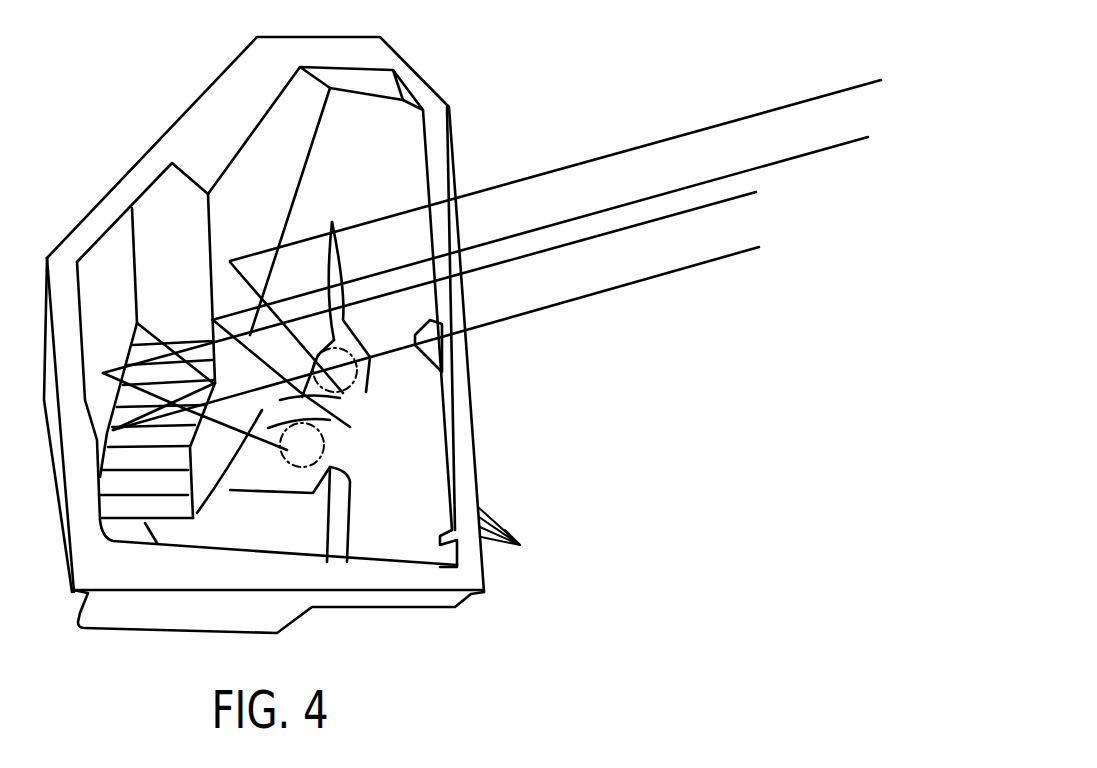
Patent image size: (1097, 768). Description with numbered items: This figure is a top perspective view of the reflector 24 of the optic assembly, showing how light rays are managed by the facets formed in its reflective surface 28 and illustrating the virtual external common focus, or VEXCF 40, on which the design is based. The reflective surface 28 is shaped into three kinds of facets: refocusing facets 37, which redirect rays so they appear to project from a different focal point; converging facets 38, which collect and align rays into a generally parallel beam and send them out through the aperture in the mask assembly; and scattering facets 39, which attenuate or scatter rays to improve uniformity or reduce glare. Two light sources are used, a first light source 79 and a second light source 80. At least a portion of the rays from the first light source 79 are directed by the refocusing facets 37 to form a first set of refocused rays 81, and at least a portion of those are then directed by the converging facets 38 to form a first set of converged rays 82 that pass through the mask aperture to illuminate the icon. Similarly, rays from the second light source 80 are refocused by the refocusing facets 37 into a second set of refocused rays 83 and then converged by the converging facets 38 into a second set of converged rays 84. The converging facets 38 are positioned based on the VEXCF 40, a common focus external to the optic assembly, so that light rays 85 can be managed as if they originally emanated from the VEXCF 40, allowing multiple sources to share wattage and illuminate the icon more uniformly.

The reflector 24 is at (107, 562).
The reflective surface 28 is at (361, 167).
The refocusing facets 37 is at (280, 400).
The converging facets 38 is at (98, 269).
The scattering facets 39 is at (120, 484).
The VEXCF 40 is at (520, 545).
The first light source 79 is at (330, 447).
The second light source 80 is at (345, 392).
The first set of refocused rays 81 is at (238, 468).
The first set of converged rays 82 is at (592, 240).
The second set of refocused rays 83 is at (332, 222).
The second set of converged rays 84 is at (673, 137).
The light rays 85 is at (483, 527).